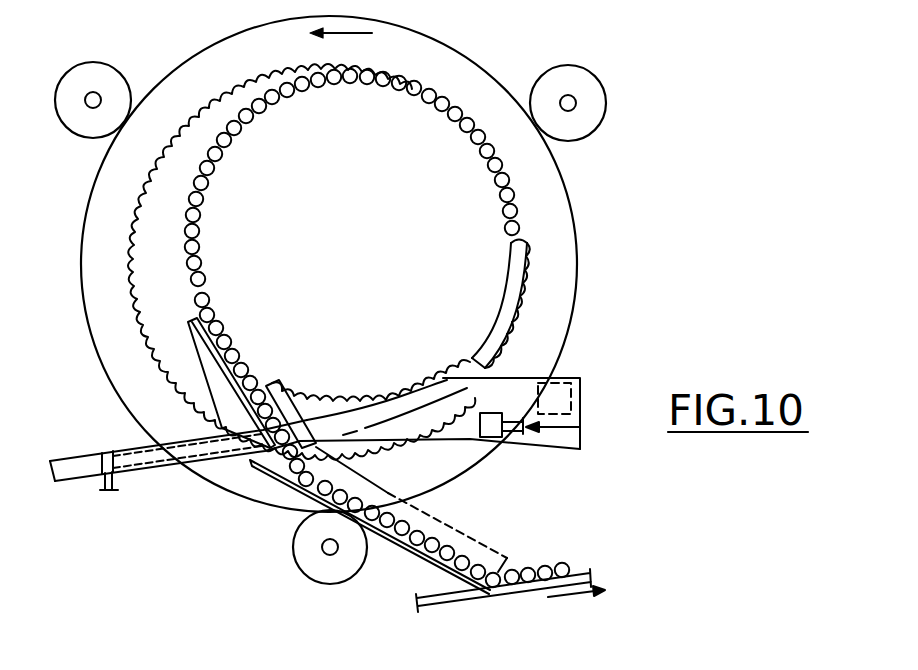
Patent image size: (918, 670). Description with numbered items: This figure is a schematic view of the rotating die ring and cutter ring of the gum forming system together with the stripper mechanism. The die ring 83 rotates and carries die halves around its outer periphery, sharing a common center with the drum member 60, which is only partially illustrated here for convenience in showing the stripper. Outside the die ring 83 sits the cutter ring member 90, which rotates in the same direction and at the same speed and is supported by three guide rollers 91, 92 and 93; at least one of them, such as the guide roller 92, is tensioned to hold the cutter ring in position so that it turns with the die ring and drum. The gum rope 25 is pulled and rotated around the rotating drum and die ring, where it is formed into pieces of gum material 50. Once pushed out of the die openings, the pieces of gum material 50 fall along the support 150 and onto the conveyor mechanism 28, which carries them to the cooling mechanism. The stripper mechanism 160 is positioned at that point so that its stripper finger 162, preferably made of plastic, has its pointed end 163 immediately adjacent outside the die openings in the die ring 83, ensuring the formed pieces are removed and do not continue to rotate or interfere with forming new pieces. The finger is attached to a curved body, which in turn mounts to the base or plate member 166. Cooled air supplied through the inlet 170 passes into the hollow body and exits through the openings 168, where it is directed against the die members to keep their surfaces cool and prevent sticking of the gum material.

The cutter ring member 90 is at (560, 202).
The die ring 83 is at (427, 241).
The guide roller 91 is at (83, 66).
The guide roller 92 is at (549, 80).
The guide roller 93 is at (293, 548).
The gum rope 25 is at (520, 273).
The pieces of formed gum material 50 is at (459, 544).
The drum member 60 is at (205, 448).
The support 150 is at (215, 315).
The pointed end 163 is at (266, 380).
The stripper finger 162 is at (311, 388).
The stripper mechanism 160 is at (507, 380).
The base or plate member 166 is at (582, 397).
The openings 168 is at (584, 376).
The inlet 170 is at (492, 428).
The conveyor mechanism 28 is at (508, 598).